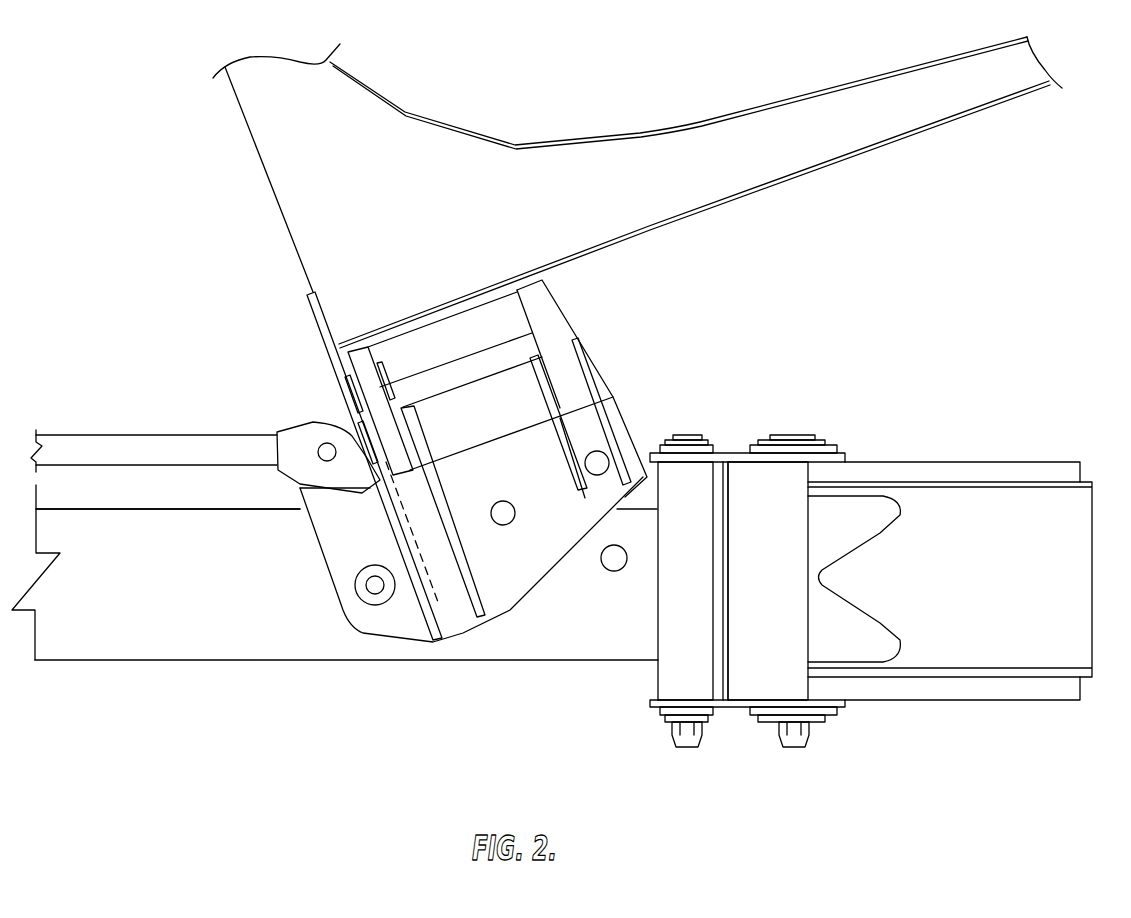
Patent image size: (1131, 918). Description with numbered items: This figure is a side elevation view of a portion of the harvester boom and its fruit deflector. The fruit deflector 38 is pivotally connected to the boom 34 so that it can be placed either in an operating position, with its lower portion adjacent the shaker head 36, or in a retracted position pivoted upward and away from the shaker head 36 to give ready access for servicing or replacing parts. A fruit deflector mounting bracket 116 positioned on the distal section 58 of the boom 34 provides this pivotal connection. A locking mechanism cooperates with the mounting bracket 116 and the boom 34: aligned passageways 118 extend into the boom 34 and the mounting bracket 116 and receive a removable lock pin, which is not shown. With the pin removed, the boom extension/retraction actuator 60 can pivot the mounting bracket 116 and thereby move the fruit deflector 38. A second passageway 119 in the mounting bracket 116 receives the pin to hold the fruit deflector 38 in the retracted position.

The boom 34 is at (156, 704).
The shaker head 36 is at (1029, 449).
The fruit deflector 38 is at (556, 102).
The distal section 58 is at (303, 662).
The boom extension/retraction actuator 60 is at (175, 413).
The fruit deflector mounting bracket 116 is at (415, 627).
The aligned passageways 118 is at (583, 496).
The second passageway 119 is at (510, 526).